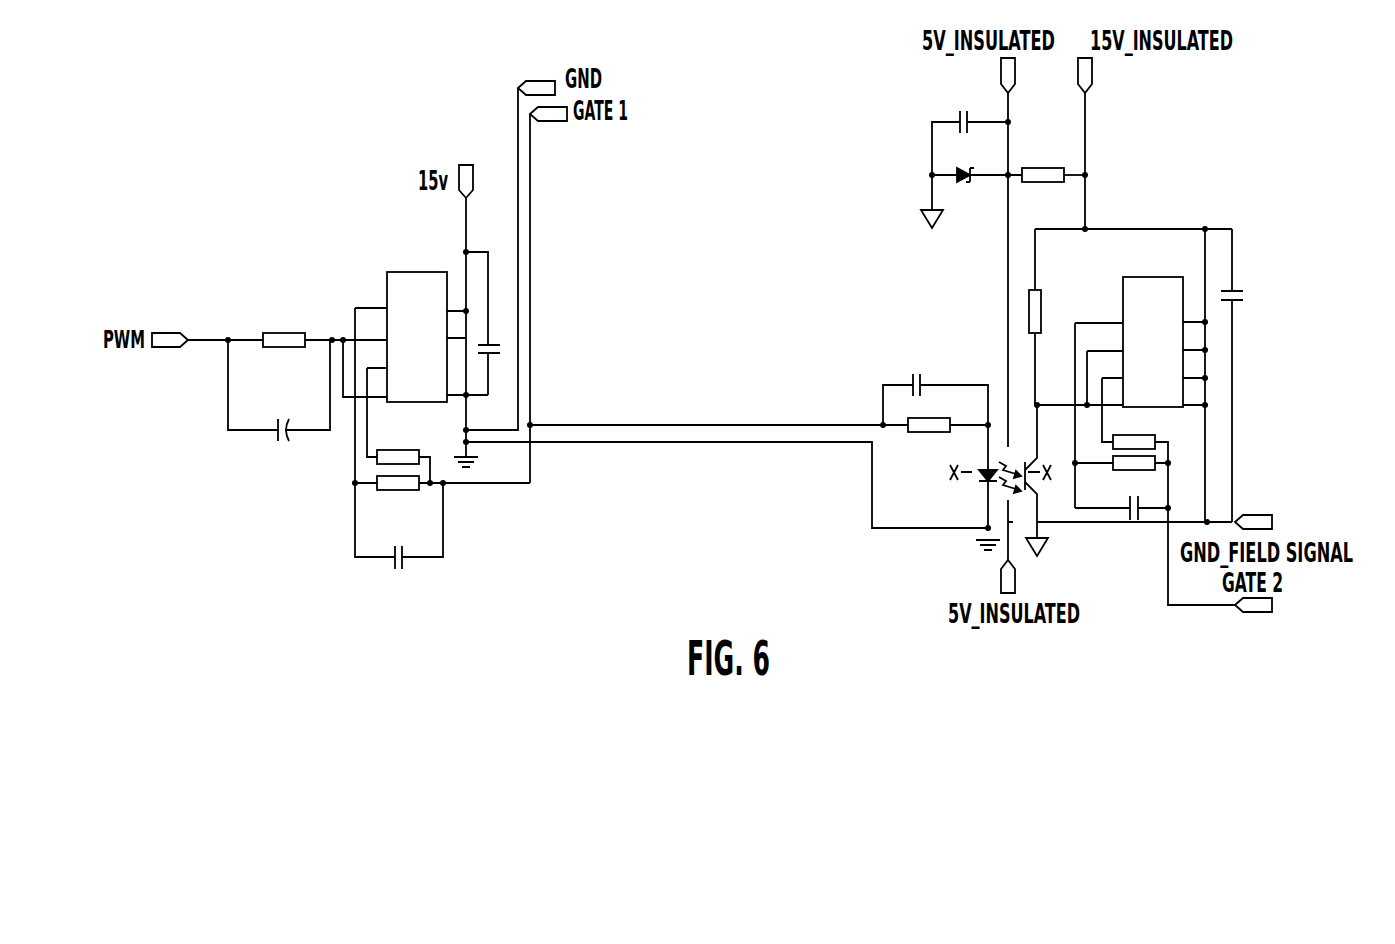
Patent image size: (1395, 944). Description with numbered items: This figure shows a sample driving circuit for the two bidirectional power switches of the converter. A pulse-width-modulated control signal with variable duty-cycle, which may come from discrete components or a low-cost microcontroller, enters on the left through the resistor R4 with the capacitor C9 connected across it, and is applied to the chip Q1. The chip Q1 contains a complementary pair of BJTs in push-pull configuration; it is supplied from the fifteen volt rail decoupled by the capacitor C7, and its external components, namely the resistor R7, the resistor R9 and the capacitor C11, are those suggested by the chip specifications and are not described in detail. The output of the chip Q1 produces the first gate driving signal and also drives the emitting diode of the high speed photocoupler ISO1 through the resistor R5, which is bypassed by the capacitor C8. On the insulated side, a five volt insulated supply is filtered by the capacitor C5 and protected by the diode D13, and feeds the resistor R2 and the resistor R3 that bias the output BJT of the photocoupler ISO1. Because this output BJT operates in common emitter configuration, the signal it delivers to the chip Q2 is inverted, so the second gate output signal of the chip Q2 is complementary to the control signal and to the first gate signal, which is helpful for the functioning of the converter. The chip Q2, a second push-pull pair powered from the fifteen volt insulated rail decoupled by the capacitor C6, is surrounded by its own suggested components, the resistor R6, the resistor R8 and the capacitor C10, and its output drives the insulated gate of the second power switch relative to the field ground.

The resistor R4 is at (284, 324).
The capacitor C9 is at (279, 390).
The chip Q1 is at (415, 356).
The capacitor C7 is at (484, 323).
The resistor R7 is at (403, 450).
The resistor R9 is at (442, 497).
The capacitor C11 is at (399, 526).
The capacitor C8 is at (935, 381).
The resistor R5 is at (935, 412).
The high speed photocoupler ISO1 is at (993, 480).
The capacitor C5 is at (970, 127).
The diode D13 is at (971, 198).
The resistor R2 is at (1053, 157).
The resistor R3 is at (1052, 317).
The chip Q2 is at (1121, 375).
The capacitor C6 is at (1245, 375).
The resistor R6 is at (1174, 505).
The resistor R8 is at (1121, 479).
The capacitor C10 is at (1121, 528).